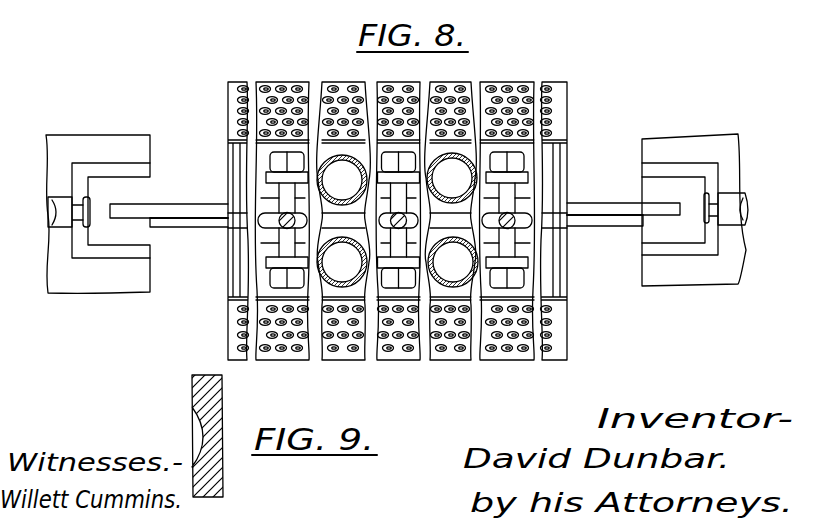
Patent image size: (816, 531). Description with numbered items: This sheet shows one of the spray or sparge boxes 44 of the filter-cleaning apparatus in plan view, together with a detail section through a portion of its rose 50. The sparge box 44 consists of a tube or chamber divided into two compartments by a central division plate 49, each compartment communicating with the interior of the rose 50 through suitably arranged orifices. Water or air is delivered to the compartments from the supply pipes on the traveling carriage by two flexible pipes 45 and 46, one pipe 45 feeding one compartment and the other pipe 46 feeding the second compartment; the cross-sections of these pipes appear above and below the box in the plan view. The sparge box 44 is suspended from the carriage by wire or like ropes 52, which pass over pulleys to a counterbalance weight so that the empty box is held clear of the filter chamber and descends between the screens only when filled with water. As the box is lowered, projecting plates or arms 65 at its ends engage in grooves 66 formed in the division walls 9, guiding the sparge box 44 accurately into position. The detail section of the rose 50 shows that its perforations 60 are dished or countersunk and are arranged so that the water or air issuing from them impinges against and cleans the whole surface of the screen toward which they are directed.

The walls 9 is at (396, 213).
The spray or sparge boxes 44 is at (396, 214).
The flexible pipe 45 is at (397, 179).
The flexible pipe 46 is at (397, 262).
The central division plate 49 is at (198, 219).
The rose 50 is at (527, 70).
The wire or like ropes 52 is at (516, 210).
The perforations 60 is at (330, 86).
The projecting plates or arms 65 is at (157, 212).
The grooves 66 is at (396, 210).